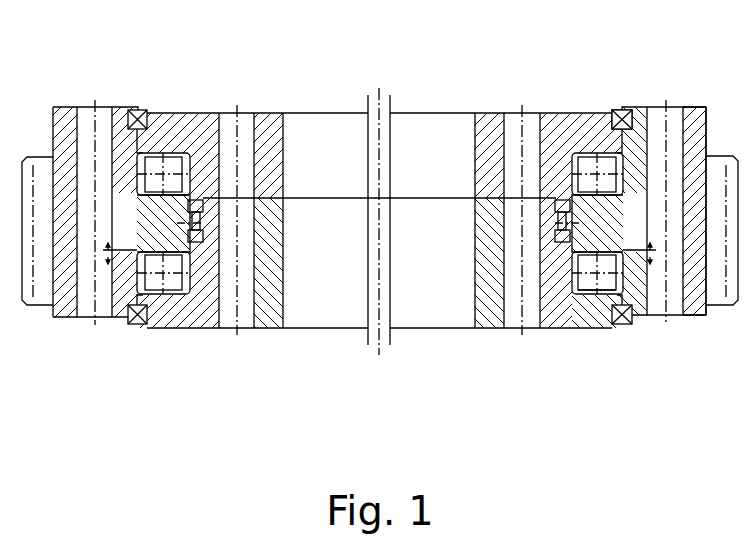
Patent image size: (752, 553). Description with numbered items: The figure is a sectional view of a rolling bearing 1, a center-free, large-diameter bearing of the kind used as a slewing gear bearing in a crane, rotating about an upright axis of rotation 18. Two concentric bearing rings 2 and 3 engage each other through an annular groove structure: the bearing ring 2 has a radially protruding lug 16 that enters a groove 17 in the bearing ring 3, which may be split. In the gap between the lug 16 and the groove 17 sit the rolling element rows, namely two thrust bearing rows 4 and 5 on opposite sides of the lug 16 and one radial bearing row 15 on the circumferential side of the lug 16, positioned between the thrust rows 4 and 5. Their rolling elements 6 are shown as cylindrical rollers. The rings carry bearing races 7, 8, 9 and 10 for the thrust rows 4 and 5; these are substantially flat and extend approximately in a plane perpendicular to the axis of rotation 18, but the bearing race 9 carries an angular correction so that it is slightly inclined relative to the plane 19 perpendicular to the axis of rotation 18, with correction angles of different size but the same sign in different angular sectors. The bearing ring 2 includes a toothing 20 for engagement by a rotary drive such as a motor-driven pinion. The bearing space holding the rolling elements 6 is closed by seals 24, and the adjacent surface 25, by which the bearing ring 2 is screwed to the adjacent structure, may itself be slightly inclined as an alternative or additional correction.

The rolling bearing 1 is at (192, 358).
The bearing ring 2 is at (65, 300).
The bearing ring 3 is at (553, 122).
The thrust bearing row 4 is at (609, 112).
The thrust bearing row 5 is at (603, 320).
The rolling elements 6 is at (607, 160).
The bearing race 7 is at (592, 122).
The bearing race 8 is at (556, 198).
The bearing race 9 is at (562, 248).
The bearing race 10 is at (578, 292).
The radial bearing row 15 is at (558, 220).
The lug 16 is at (198, 236).
The groove 17 is at (203, 250).
The axis of rotation 18 is at (380, 328).
The plane perpendicular to the axis of rotation 19 is at (135, 285).
The toothing 20 is at (729, 280).
The seal 24 is at (140, 108).
The adjacent surface 25 is at (697, 107).